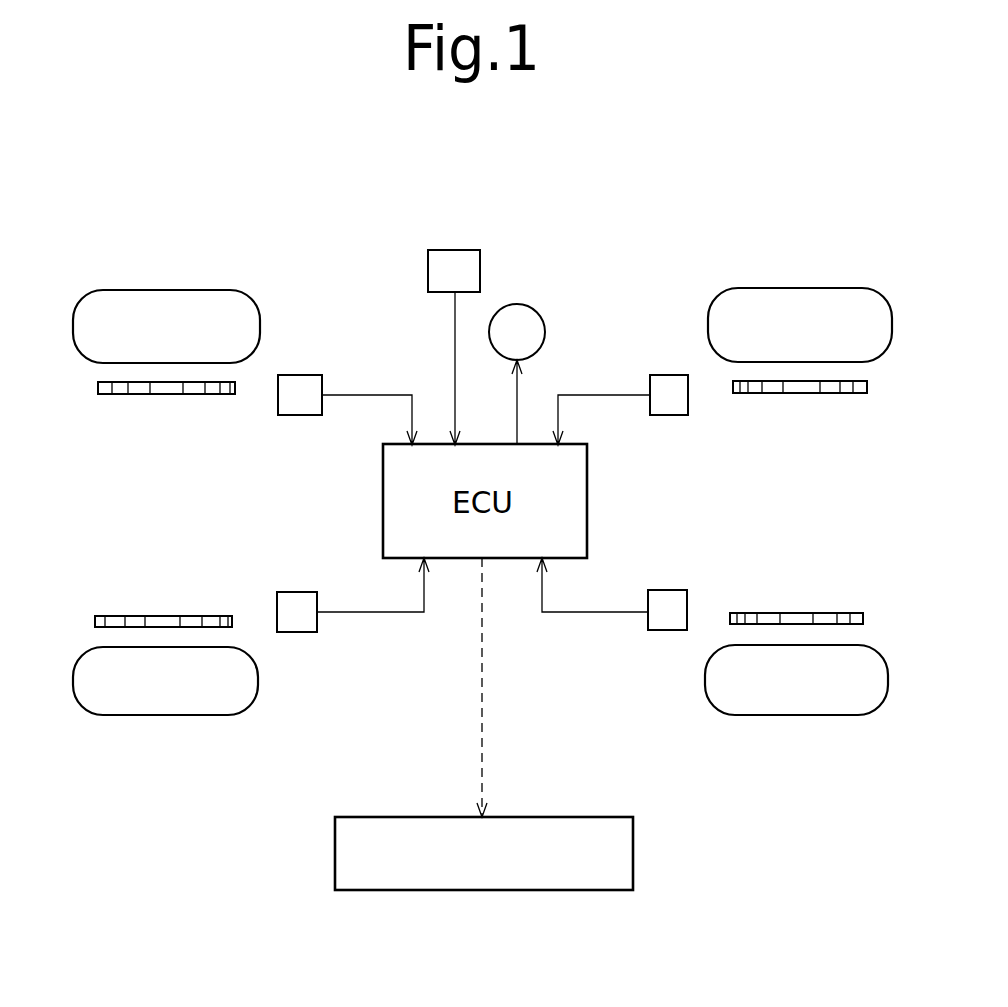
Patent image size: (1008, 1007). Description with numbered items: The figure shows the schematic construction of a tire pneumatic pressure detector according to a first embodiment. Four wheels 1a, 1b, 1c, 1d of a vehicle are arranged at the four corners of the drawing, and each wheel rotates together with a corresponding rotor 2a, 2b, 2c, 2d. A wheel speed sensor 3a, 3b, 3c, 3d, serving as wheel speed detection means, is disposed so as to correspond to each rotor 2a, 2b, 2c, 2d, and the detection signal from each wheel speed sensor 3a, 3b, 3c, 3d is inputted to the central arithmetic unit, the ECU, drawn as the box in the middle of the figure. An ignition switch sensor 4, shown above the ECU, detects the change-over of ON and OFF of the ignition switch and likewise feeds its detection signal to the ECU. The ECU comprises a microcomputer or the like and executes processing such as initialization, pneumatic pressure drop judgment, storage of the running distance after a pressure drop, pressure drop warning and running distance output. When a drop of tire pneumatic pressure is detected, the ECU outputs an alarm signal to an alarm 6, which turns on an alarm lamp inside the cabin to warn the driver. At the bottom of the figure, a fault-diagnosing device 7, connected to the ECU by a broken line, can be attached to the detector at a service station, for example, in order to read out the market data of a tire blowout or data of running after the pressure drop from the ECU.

The wheel 1a is at (120, 290).
The wheel 1b is at (120, 715).
The wheel 1c is at (857, 288).
The wheel 1d is at (848, 715).
The rotor 2a is at (120, 394).
The rotor 2b is at (120, 616).
The rotor 2c is at (848, 393).
The rotor 2d is at (847, 613).
The wheel speed sensor 3a is at (295, 415).
The wheel speed sensor 3b is at (293, 592).
The wheel speed sensor 3c is at (673, 415).
The wheel speed sensor 3d is at (677, 590).
The ignition switch sensor 4 is at (437, 250).
The alarm 6 is at (538, 308).
The fault-diagnosing device 7 is at (633, 845).